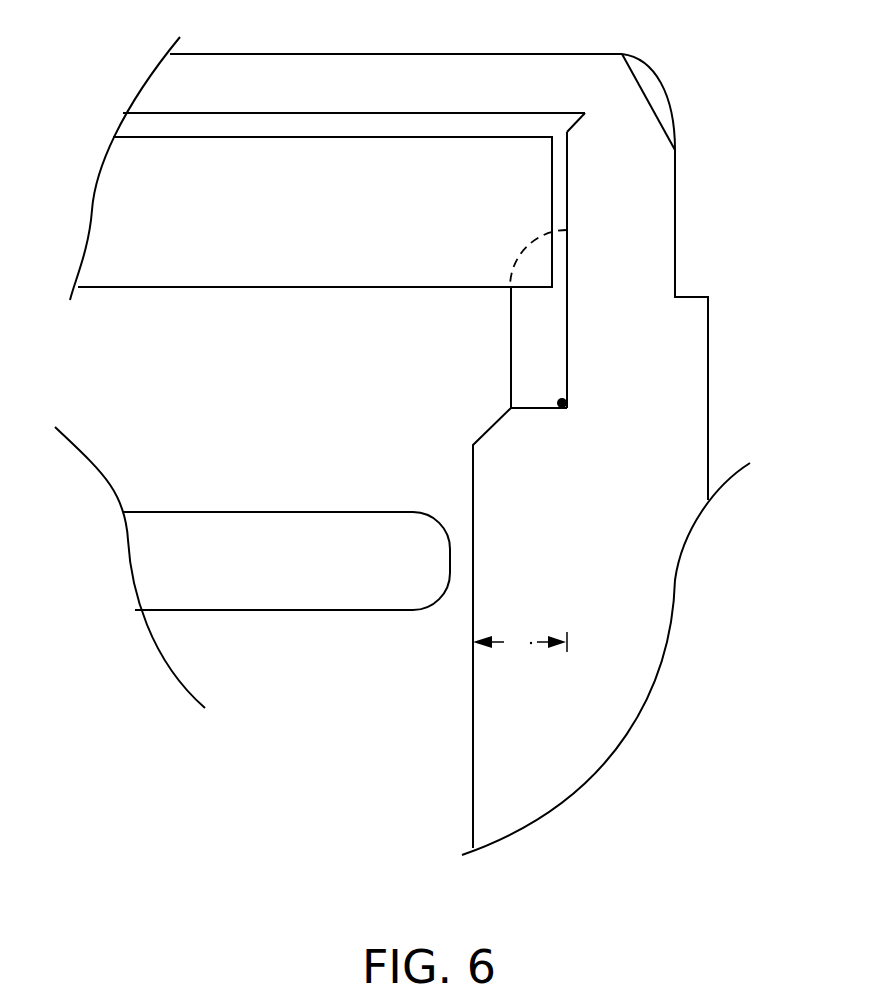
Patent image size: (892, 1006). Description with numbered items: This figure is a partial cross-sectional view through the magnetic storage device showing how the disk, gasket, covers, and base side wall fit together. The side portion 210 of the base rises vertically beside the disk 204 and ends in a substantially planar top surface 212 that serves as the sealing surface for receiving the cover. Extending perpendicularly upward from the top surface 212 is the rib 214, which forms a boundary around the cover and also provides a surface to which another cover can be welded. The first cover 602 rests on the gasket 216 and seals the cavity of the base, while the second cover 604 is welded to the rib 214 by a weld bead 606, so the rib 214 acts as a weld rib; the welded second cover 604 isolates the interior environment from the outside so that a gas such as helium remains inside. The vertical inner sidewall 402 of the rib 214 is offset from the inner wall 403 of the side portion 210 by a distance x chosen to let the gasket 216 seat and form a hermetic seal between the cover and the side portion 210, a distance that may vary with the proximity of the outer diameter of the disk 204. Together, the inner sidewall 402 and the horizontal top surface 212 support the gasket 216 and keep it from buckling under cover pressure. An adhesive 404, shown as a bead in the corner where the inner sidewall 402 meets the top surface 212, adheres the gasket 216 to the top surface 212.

The second cover 604 is at (399, 102).
The weld bead 606 is at (658, 85).
The first cover 602 is at (315, 212).
The rib 214 is at (713, 115).
The gasket 216 is at (538, 319).
The inner sidewall 402 is at (567, 313).
The adhesive 404 is at (570, 407).
The top surface 212 is at (538, 408).
The magnetic disk 204 is at (286, 561).
The side portion 210 is at (606, 631).
The inner wall 403 is at (474, 663).